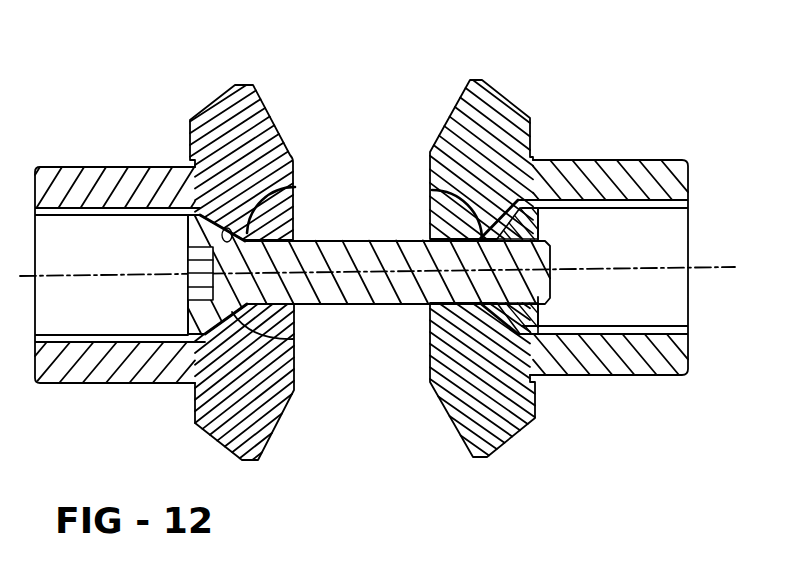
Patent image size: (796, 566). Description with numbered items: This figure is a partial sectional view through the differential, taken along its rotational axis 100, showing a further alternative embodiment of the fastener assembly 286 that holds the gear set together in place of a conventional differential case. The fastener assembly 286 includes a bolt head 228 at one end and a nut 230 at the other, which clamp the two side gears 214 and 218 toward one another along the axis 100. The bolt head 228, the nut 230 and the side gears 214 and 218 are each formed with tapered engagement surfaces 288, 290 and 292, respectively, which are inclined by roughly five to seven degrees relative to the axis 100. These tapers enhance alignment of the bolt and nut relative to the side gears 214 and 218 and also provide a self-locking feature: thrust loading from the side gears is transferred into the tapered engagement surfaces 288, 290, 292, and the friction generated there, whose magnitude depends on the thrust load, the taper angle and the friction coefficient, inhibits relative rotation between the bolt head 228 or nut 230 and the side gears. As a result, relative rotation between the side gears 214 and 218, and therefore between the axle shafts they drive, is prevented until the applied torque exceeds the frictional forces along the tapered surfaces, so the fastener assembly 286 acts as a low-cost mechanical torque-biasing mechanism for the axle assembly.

The longitudinal axis 100 is at (667, 268).
The side gear 214 is at (484, 98).
The side gear 218 is at (257, 101).
The bolt head 228 is at (187, 207).
The nut 230 is at (533, 217).
The fastener assembly 286 is at (362, 234).
The tapered engagement surface 288 is at (293, 339).
The tapered engagement surface 290 is at (510, 317).
The tapered engagement surface 292 is at (432, 190).